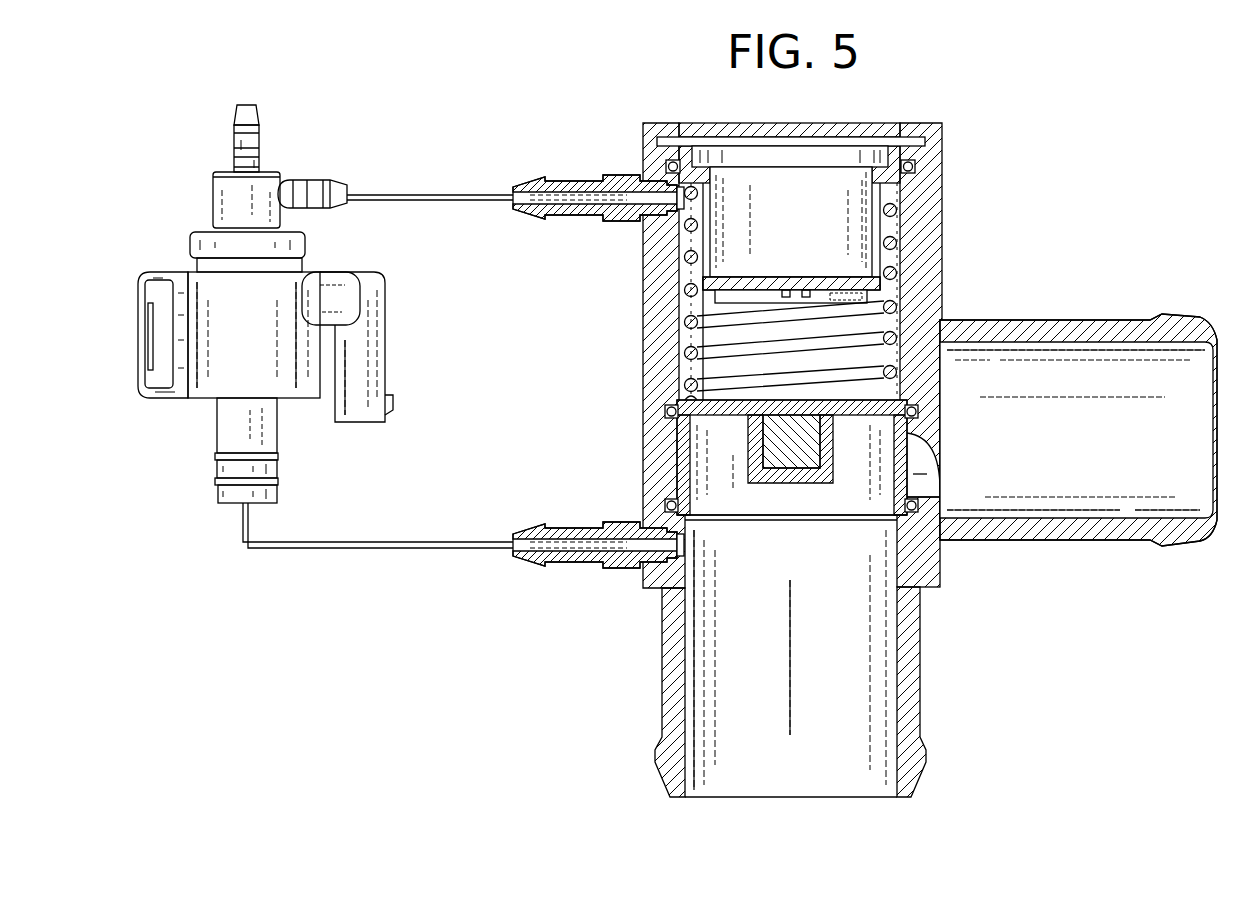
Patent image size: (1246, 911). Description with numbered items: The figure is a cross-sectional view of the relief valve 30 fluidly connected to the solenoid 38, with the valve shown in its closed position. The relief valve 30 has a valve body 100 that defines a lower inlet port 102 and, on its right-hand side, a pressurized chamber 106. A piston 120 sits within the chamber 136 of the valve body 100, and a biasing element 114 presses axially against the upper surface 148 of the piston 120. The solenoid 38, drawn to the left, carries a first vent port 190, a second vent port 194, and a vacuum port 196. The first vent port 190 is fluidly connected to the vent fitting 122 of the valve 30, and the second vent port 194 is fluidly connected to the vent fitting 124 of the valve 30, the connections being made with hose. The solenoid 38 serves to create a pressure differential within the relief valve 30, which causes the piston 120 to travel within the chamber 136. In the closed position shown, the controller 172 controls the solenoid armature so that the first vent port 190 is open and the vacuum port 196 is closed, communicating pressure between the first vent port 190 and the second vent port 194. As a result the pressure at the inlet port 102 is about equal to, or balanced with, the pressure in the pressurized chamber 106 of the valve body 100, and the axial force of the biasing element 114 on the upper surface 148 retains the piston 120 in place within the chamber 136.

The relief valve 30 is at (1060, 176).
The solenoid 38 is at (340, 86).
The valve body 100 is at (932, 177).
The inlet port 102 is at (848, 709).
The pressurized chamber 106 is at (962, 321).
The biasing element 114 is at (902, 317).
The piston 120 is at (853, 497).
The vent fitting 122 is at (586, 566).
The vent fitting 124 is at (579, 221).
The chamber 136 is at (702, 703).
The upper surface 148 is at (697, 374).
The controller 172 is at (902, 250).
The first vent port 190 is at (280, 486).
The second vent port 194 is at (312, 186).
The vacuum port 196 is at (236, 142).